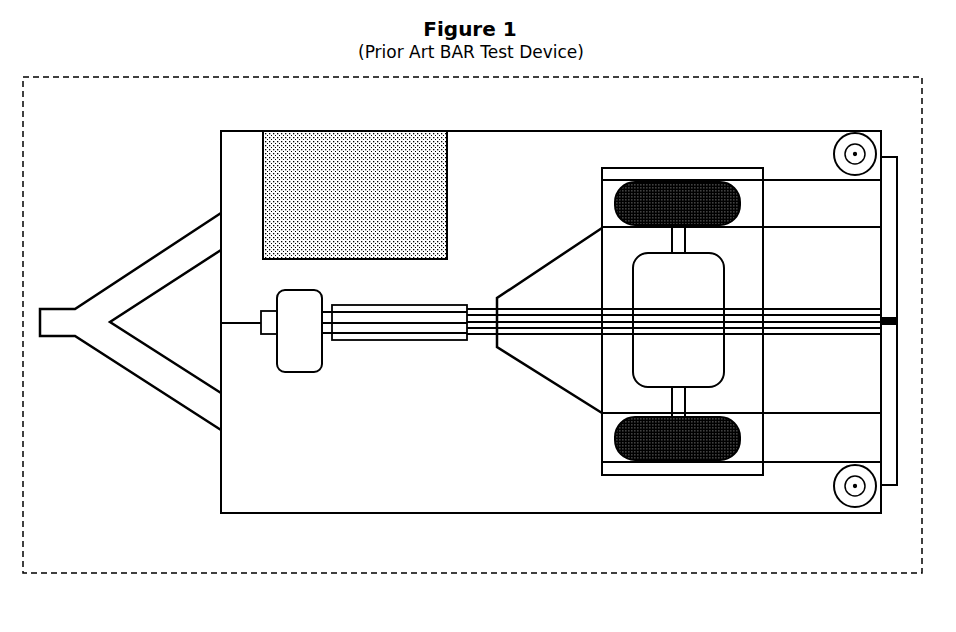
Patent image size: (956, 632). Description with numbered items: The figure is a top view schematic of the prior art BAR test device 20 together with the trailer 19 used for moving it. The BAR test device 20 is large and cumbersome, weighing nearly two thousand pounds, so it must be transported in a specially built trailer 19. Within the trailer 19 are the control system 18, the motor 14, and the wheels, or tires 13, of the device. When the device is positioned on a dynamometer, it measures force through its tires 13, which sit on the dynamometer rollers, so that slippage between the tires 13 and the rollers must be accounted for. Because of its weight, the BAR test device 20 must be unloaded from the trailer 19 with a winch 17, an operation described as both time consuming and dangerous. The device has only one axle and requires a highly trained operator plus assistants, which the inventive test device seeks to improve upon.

The tires 13 is at (677, 323).
The motor 14 is at (735, 253).
The winch 17 is at (283, 424).
The control system 18 is at (355, 175).
The trailer 19 is at (468, 344).
The BAR test device 20 is at (472, 347).